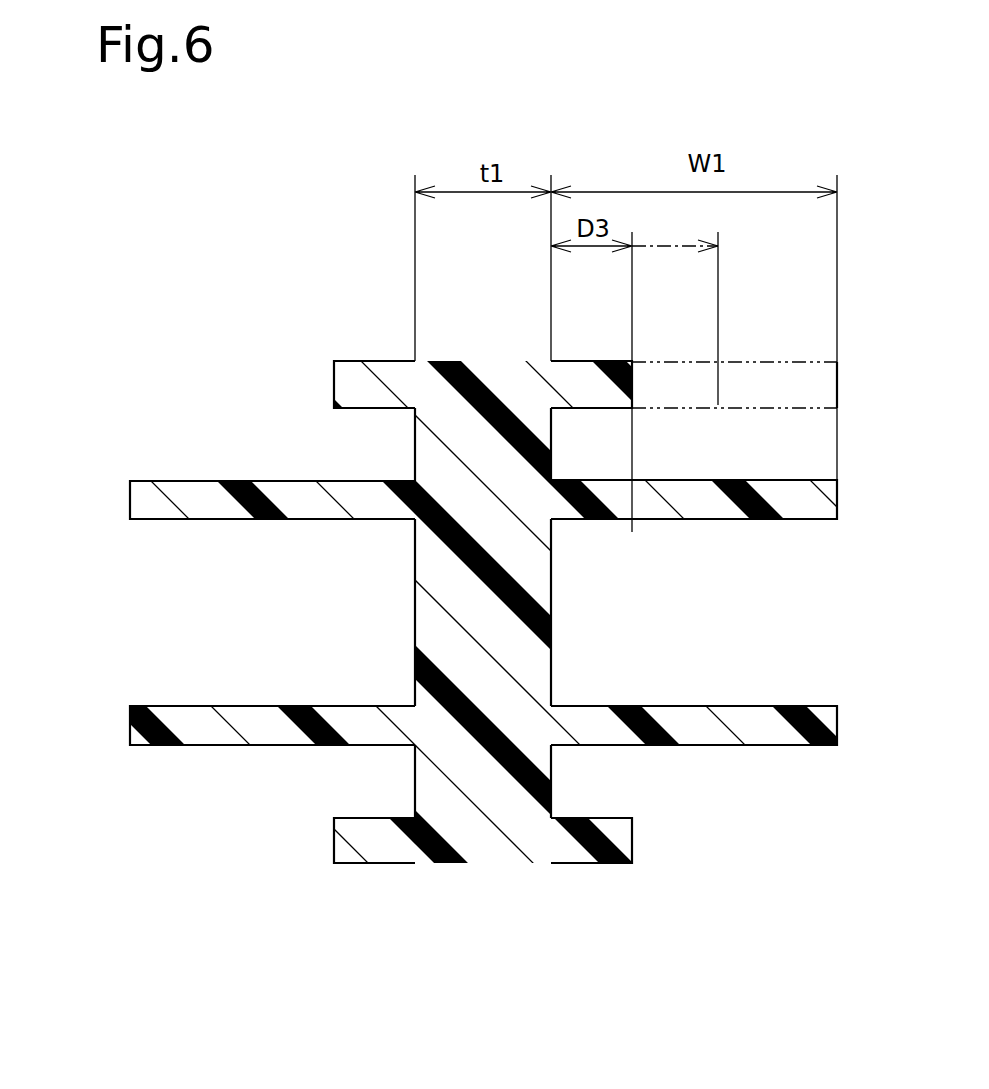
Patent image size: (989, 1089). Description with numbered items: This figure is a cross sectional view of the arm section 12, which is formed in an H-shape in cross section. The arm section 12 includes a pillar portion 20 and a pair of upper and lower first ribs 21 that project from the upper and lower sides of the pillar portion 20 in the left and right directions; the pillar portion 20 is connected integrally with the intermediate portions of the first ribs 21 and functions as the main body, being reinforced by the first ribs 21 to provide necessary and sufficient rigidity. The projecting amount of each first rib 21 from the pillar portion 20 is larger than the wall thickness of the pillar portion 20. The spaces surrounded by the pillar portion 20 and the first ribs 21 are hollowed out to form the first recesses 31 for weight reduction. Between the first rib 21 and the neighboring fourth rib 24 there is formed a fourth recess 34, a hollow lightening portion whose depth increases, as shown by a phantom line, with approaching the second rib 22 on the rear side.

The arm section 12 is at (362, 290).
The pillar portion 20 is at (530, 655).
The first ribs 21 is at (147, 483).
The second rib 22 is at (740, 362).
The fourth rib 24 is at (350, 378).
The first recesses 31 is at (337, 593).
The fourth recess 34 is at (340, 445).